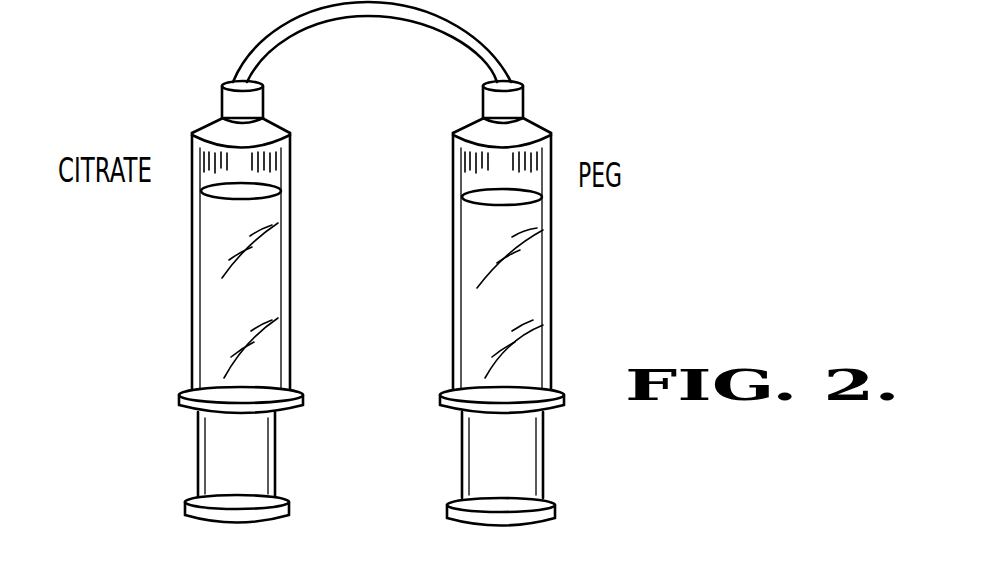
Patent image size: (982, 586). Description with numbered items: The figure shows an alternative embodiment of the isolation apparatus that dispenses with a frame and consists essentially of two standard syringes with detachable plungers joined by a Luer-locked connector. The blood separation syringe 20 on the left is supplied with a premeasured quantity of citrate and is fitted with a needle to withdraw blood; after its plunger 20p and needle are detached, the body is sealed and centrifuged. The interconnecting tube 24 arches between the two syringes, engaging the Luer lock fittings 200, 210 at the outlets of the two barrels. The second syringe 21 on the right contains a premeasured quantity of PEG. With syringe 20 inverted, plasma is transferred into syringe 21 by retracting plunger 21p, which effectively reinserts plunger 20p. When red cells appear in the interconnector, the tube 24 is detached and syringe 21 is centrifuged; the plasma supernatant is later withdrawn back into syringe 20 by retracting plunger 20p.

The blood separation syringe 20 is at (208, 320).
The plunger 20p is at (200, 249).
The second syringe 21 is at (536, 322).
The plunger 21p is at (536, 376).
The interconnecting tube 24 is at (371, 18).
The citrate syringe connector cap 200 is at (237, 80).
The PEG syringe connector cap 210 is at (513, 80).